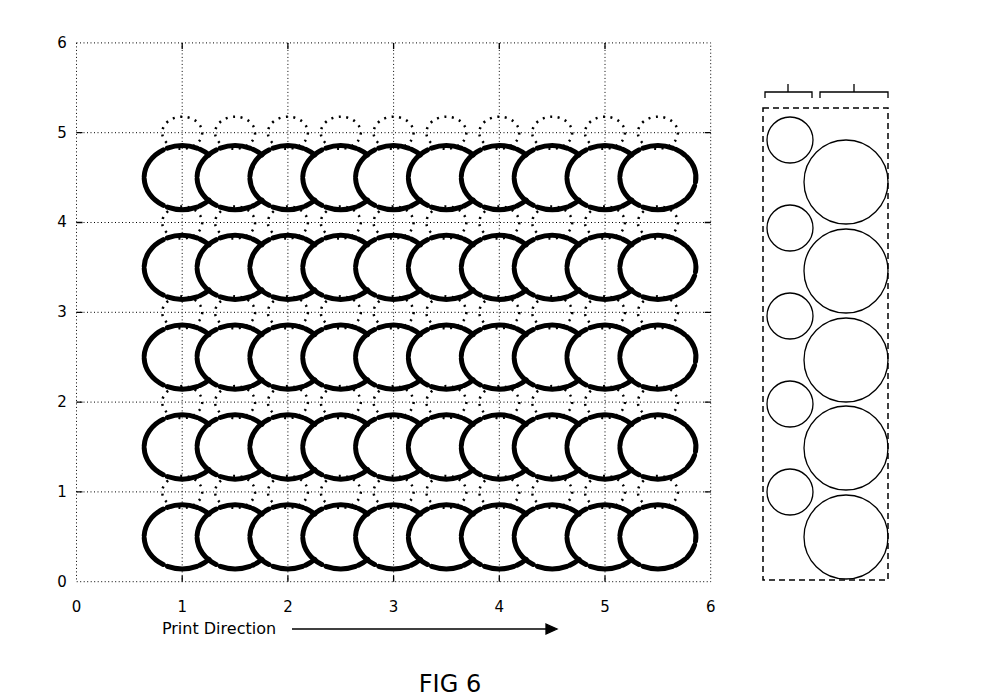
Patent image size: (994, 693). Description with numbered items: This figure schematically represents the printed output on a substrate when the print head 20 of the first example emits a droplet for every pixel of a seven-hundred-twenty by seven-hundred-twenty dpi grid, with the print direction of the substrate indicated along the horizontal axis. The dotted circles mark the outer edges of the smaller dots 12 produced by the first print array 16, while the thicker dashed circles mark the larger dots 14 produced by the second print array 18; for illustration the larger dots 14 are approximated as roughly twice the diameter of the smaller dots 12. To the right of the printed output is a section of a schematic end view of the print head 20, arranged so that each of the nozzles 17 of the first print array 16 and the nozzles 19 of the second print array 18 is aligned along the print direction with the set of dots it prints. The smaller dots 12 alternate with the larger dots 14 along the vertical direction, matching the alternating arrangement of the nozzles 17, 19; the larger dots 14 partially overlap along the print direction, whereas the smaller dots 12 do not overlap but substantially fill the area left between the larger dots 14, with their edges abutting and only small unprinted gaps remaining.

The dots 12 is at (289, 115).
The dots 14 is at (518, 146).
The first print array 16 is at (788, 77).
The nozzles 17 is at (790, 316).
The second print array 18 is at (854, 77).
The nozzles 19 is at (846, 359).
The print head 20 is at (791, 583).